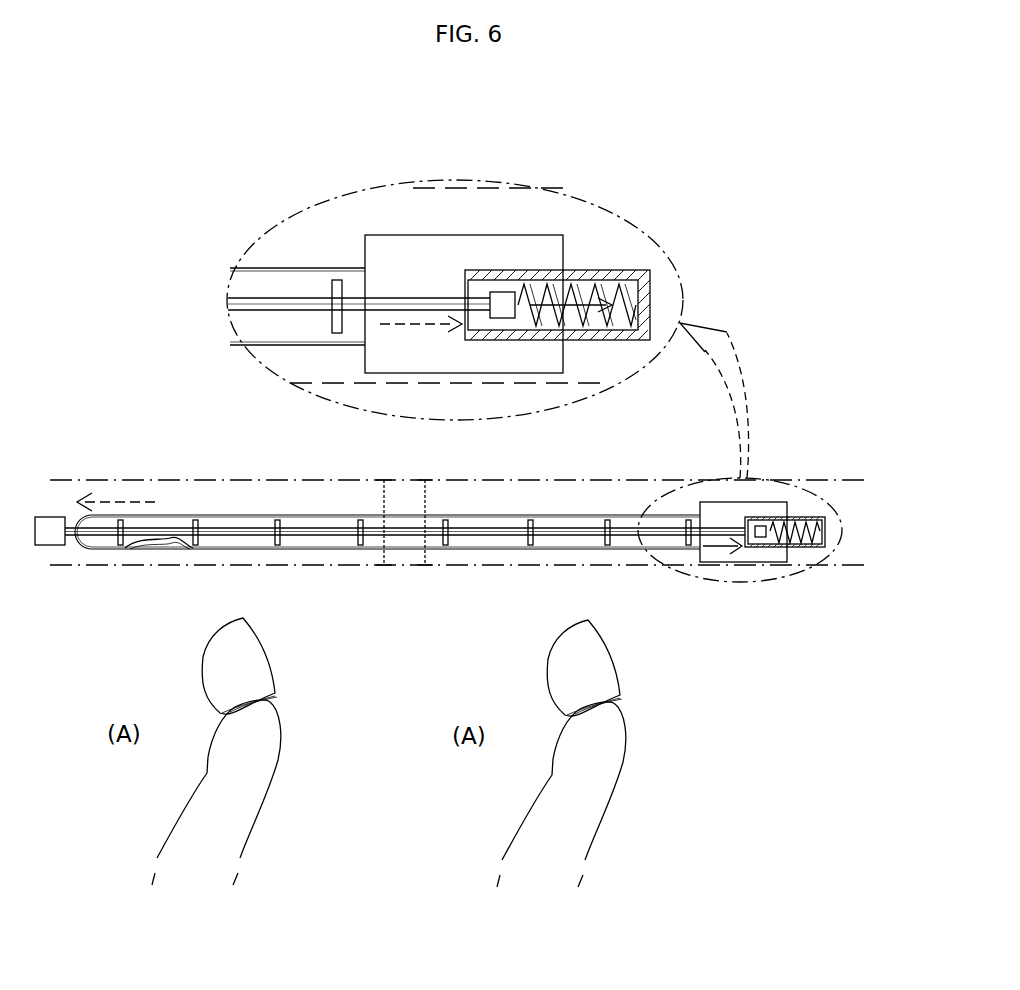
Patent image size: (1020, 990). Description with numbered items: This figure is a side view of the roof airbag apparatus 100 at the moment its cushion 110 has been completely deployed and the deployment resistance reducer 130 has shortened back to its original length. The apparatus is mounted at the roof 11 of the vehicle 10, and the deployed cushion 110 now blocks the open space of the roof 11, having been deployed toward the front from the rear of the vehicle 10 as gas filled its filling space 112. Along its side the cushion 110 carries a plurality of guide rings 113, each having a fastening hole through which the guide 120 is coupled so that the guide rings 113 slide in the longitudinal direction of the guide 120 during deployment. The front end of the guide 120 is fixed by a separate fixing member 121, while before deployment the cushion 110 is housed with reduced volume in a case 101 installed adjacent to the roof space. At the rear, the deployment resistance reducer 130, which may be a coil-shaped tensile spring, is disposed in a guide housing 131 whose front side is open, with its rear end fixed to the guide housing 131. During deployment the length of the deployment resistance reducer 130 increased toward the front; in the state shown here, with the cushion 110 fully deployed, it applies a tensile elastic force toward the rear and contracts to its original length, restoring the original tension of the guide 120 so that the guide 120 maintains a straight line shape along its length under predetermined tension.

The vehicle 10 is at (116, 488).
The roof 11 is at (228, 494).
The roof airbag apparatus 100 is at (538, 242).
The case 101 is at (500, 247).
The cushion 110 is at (580, 542).
The filling space 112 is at (166, 544).
The guide rings 113 is at (530, 548).
The guide 120 is at (303, 533).
The fixing member 121 is at (50, 538).
The deployment resistance reducer 130 is at (645, 270).
The guide housing 131 is at (603, 290).